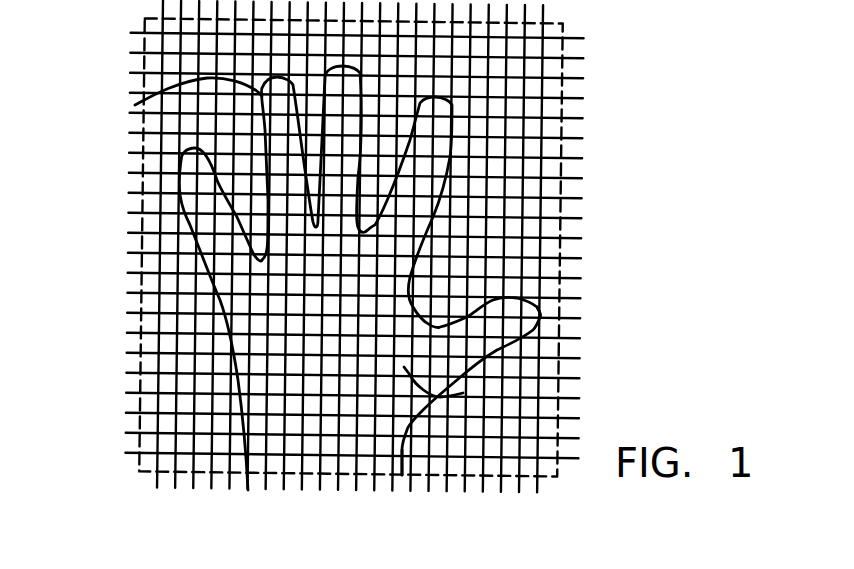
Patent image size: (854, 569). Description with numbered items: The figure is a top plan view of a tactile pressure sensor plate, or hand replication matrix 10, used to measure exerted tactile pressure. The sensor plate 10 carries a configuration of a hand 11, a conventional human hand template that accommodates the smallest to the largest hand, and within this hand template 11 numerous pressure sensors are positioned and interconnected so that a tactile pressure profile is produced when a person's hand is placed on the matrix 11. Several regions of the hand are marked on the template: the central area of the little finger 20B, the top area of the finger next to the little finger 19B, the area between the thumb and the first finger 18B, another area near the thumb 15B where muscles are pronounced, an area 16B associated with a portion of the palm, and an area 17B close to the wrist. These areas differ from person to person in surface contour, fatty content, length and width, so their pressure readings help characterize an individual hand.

The hand replication matrix 10 is at (558, 137).
The hand configuration 11 is at (535, 306).
The area near the thumb 15B is at (463, 393).
The palm area 16B is at (214, 334).
The wrist area 17B is at (374, 447).
The area between thumb and first finger 18B is at (396, 335).
The top area of the finger next to the first digit 19B is at (136, 103).
The central area of the little finger 20B is at (190, 208).